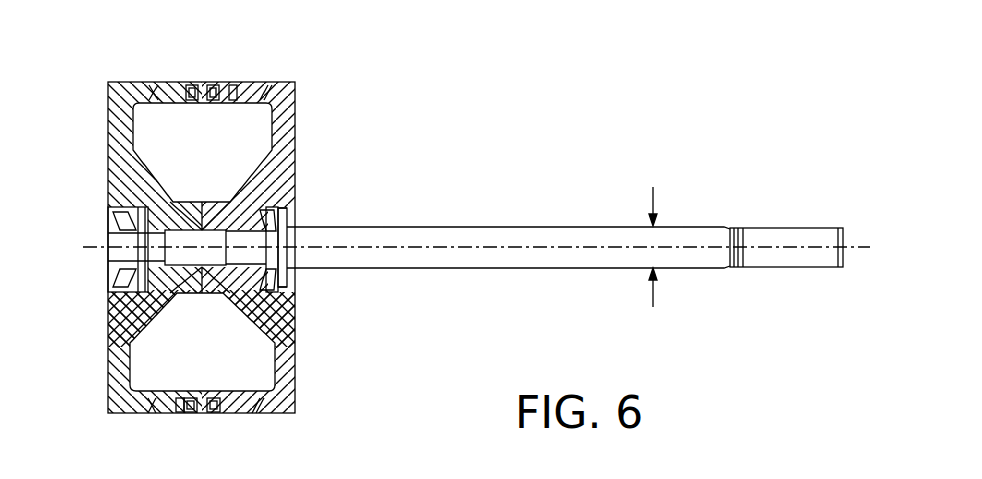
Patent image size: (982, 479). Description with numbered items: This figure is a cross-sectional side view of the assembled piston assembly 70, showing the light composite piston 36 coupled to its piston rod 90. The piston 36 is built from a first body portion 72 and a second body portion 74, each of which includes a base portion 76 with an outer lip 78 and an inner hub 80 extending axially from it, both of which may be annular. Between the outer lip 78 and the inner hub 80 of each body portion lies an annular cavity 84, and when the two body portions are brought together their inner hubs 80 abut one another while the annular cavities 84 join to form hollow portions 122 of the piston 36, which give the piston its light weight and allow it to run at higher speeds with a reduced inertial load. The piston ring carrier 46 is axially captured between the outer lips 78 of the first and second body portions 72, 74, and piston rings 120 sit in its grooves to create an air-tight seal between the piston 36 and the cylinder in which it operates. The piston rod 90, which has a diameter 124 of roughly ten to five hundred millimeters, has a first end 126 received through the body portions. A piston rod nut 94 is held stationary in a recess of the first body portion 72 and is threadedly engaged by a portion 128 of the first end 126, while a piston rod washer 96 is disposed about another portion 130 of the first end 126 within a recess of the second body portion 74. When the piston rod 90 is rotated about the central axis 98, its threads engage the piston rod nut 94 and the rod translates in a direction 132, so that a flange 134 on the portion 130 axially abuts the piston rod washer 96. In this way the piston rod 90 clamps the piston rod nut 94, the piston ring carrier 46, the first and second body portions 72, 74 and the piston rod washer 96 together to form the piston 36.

The piston 36 is at (124, 51).
The piston assembly 70 is at (160, 26).
The first body portion 72 is at (103, 85).
The second body portion 74 is at (300, 110).
The base portion 76 is at (112, 200).
The outer lip 78 is at (153, 88).
The inner hub 80 is at (118, 165).
The annular cavity 84 is at (143, 145).
The piston rod 90 is at (503, 262).
The piston rod nut 94 is at (110, 304).
The piston rod washer 96 is at (285, 197).
The central axis 98 is at (400, 247).
The piston rings 120 is at (213, 82).
The hollow portions 122 is at (183, 172).
The diameter 124 is at (655, 194).
The first end 126 is at (190, 257).
The portion 128 is at (120, 252).
The portion 130 is at (290, 266).
The direction 132 is at (548, 197).
The flange 134 is at (286, 230).
The piston ring carrier 46 is at (233, 87).